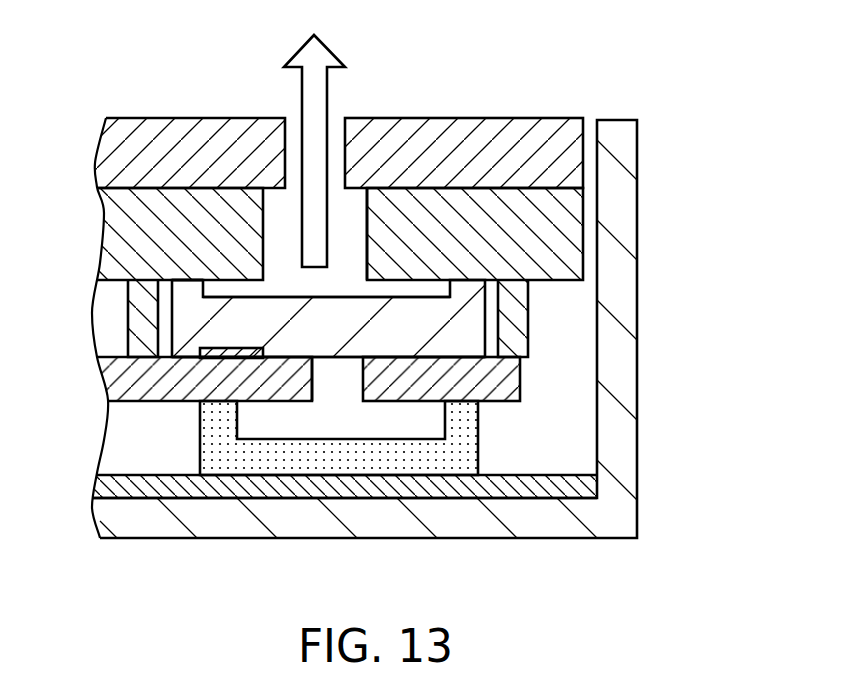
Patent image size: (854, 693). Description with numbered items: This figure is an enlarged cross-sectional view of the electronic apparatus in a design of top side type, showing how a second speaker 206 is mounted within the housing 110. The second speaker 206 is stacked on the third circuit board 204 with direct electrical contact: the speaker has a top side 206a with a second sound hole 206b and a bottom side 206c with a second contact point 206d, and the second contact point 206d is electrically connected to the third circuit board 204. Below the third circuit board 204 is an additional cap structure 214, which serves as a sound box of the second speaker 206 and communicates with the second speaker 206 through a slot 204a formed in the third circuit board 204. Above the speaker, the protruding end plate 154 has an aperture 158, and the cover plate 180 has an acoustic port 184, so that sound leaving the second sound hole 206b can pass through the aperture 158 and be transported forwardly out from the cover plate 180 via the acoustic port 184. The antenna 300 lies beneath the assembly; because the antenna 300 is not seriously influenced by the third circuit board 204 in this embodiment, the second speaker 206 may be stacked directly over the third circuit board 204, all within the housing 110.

The housing 110 is at (638, 188).
The protruding end plate 154 is at (573, 242).
The aperture 158 is at (356, 208).
The cover plate 180 is at (573, 157).
The acoustic port 184 is at (335, 131).
The third circuit board 204 is at (502, 380).
The slot 204a is at (323, 384).
The second speaker 206 is at (277, 337).
The top side 206a is at (185, 270).
The second sound hole 206b is at (369, 290).
The bottom side 206c is at (291, 374).
The second contact point 206d is at (232, 353).
The cap structure 214 is at (460, 455).
The antenna 300 is at (572, 487).